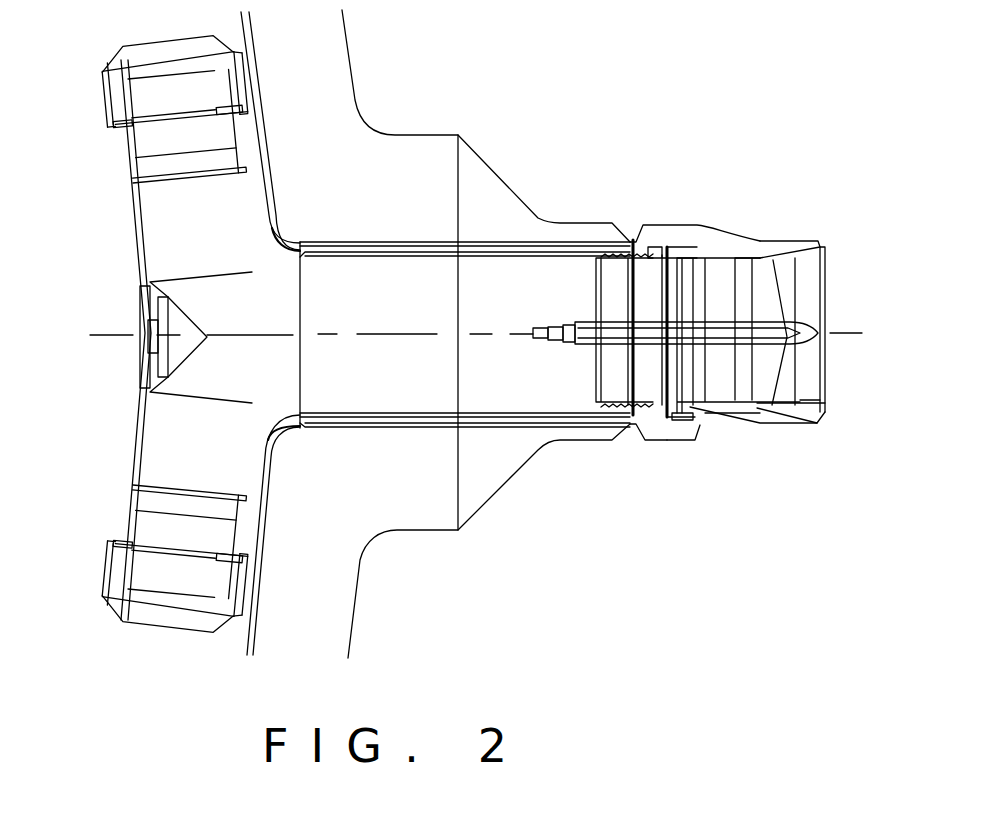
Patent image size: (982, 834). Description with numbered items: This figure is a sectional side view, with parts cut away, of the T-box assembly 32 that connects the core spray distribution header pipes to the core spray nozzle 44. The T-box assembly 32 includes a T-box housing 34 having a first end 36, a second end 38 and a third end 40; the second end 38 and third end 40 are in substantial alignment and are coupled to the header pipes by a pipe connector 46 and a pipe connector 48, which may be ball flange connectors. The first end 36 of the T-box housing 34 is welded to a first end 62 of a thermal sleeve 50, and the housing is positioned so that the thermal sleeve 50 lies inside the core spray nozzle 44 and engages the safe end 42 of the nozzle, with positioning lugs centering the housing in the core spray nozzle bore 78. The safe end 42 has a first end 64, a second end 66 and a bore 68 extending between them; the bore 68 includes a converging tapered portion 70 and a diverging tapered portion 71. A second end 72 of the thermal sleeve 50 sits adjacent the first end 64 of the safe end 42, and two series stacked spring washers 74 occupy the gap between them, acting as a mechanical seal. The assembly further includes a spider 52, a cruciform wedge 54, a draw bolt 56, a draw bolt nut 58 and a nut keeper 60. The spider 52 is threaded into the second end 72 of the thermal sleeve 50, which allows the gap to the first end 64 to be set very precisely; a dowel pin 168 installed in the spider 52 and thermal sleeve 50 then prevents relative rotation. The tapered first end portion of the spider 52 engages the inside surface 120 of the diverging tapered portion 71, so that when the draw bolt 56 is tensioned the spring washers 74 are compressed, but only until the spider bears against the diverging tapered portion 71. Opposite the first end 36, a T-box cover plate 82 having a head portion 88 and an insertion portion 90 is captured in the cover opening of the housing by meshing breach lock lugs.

The T-box assembly 32 is at (104, 244).
The T-box housing 34 is at (234, 226).
The first end 36 is at (285, 282).
The second end 38 is at (120, 184).
The third end 40 is at (119, 488).
The safe end 42 is at (683, 222).
The core spray nozzle 44 is at (476, 153).
The pipe connector 46 is at (113, 111).
The pipe connector 48 is at (110, 582).
The thermal sleeve 50 is at (393, 273).
The spider 52 is at (700, 240).
The cruciform wedge 54 is at (786, 240).
The draw bolt 56 is at (558, 345).
The draw bolt nut 58 is at (571, 322).
The nut keeper 60 is at (585, 345).
The first end 62 is at (334, 259).
The first end 64 is at (690, 412).
The second end 66 is at (810, 428).
The bore 68 is at (810, 410).
The converging tapered portion 70 is at (763, 408).
The diverging tapered portion 71 is at (712, 425).
The second end 72 is at (587, 265).
The spring washer 74 is at (672, 423).
The core spray nozzle bore 78 is at (552, 270).
The T-box cover plate 82 is at (140, 363).
The head portion 88 is at (140, 287).
The insertion portion 90 is at (177, 327).
The inside surface 120 is at (767, 258).
The dowel pin 168 is at (652, 247).